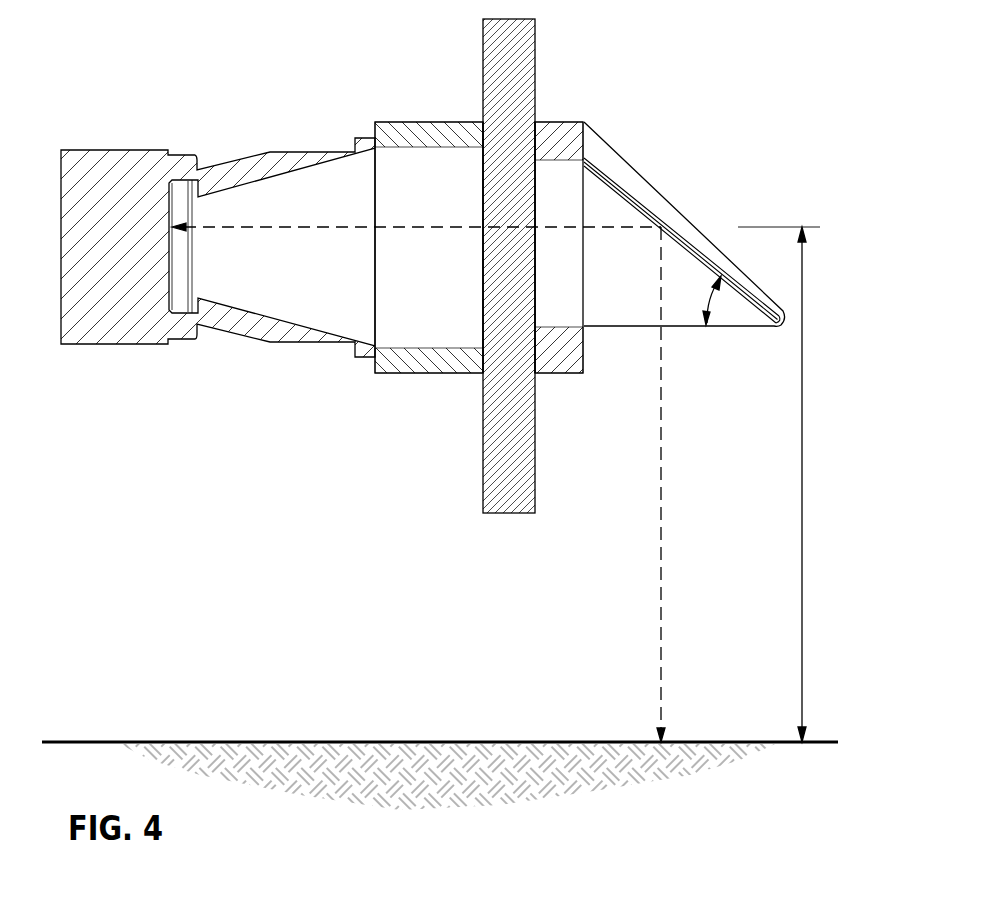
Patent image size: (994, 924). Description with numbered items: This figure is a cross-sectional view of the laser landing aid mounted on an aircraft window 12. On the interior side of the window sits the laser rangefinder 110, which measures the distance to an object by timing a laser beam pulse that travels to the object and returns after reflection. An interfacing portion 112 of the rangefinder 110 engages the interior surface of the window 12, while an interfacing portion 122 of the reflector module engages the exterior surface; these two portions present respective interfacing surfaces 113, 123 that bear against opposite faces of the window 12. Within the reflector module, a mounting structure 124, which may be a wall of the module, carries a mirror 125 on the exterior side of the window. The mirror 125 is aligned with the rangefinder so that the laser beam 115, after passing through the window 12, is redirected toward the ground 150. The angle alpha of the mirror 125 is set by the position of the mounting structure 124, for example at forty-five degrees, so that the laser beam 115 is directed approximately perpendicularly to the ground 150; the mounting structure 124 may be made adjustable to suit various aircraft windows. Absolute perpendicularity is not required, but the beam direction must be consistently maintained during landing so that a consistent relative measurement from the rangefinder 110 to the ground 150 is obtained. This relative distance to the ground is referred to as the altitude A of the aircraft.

The laser rangefinder 110 is at (120, 183).
The interfacing portion of rangefinder 112 is at (415, 120).
The window 12 is at (512, 36).
The interfacing portion of reflector module 122 is at (553, 133).
The interfacing surface 113 is at (485, 358).
The interfacing surface 123 is at (532, 366).
The mounting structure 124 is at (620, 180).
The mirror 125 is at (681, 249).
The laser beam 115 is at (310, 229).
The ground 150 is at (405, 740).
The altitude A is at (802, 590).
The angle of mirror alpha is at (720, 300).